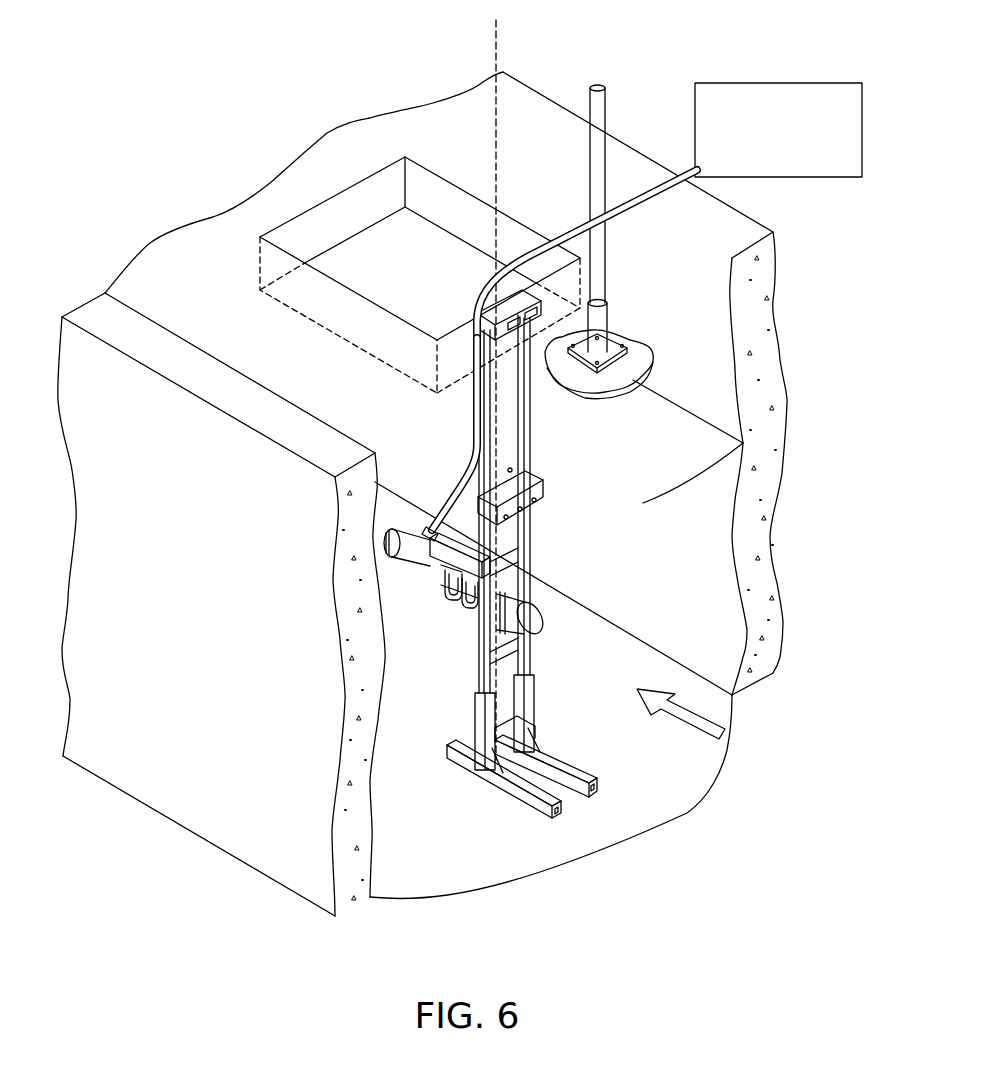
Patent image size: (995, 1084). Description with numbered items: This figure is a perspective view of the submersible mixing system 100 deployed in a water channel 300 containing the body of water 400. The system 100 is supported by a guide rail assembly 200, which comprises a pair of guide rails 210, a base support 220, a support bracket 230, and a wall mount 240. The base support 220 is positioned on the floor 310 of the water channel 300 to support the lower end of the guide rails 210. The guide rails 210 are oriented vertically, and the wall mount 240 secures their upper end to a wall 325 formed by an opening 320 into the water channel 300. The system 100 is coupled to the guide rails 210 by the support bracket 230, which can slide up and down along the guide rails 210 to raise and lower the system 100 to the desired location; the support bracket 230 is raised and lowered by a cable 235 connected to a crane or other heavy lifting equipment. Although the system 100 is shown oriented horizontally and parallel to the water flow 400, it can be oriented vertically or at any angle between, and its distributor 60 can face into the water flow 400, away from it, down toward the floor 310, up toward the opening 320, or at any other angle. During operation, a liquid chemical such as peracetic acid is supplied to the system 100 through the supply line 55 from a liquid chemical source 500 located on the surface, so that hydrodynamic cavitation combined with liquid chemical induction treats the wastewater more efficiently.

The supply line 55 is at (570, 233).
The distributor 60 is at (536, 624).
The submersible mixing system 100 is at (421, 566).
The guide rail assembly 200 is at (480, 587).
The guide rails 210 is at (530, 392).
The base support 220 is at (504, 787).
The support bracket 230 is at (445, 600).
The cable 235 is at (500, 98).
The wall mount 240 is at (455, 366).
The water channel 300 is at (240, 779).
The floor 310 is at (575, 728).
The opening 320 is at (378, 252).
The wall 325 is at (447, 350).
The body of water 400 is at (690, 725).
The liquid chemical source 500 is at (830, 82).